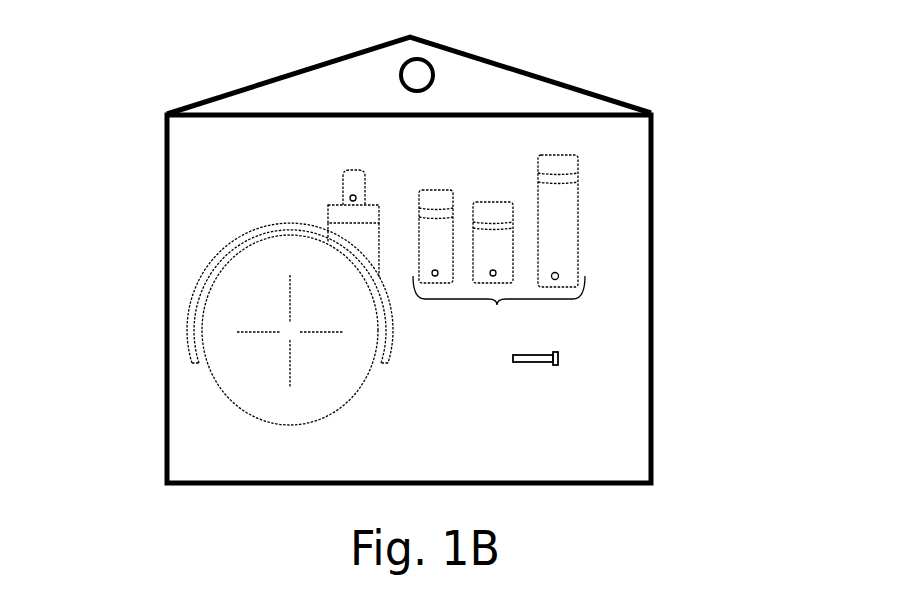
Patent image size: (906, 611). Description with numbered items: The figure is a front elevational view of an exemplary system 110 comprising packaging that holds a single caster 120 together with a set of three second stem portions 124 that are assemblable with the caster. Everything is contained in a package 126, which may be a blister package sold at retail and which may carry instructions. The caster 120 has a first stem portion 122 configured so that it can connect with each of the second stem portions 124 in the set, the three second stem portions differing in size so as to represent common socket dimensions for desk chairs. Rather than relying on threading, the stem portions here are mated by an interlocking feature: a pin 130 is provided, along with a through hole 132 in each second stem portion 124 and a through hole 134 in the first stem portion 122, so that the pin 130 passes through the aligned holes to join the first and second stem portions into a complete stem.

The system 110 is at (673, 143).
The package 126 is at (510, 66).
The caster 120 is at (300, 415).
The first stem portion 122 is at (368, 172).
The through hole 134 is at (352, 196).
The through hole 132 is at (557, 272).
The set of second stem portions 124 is at (497, 305).
The pin 130 is at (533, 365).